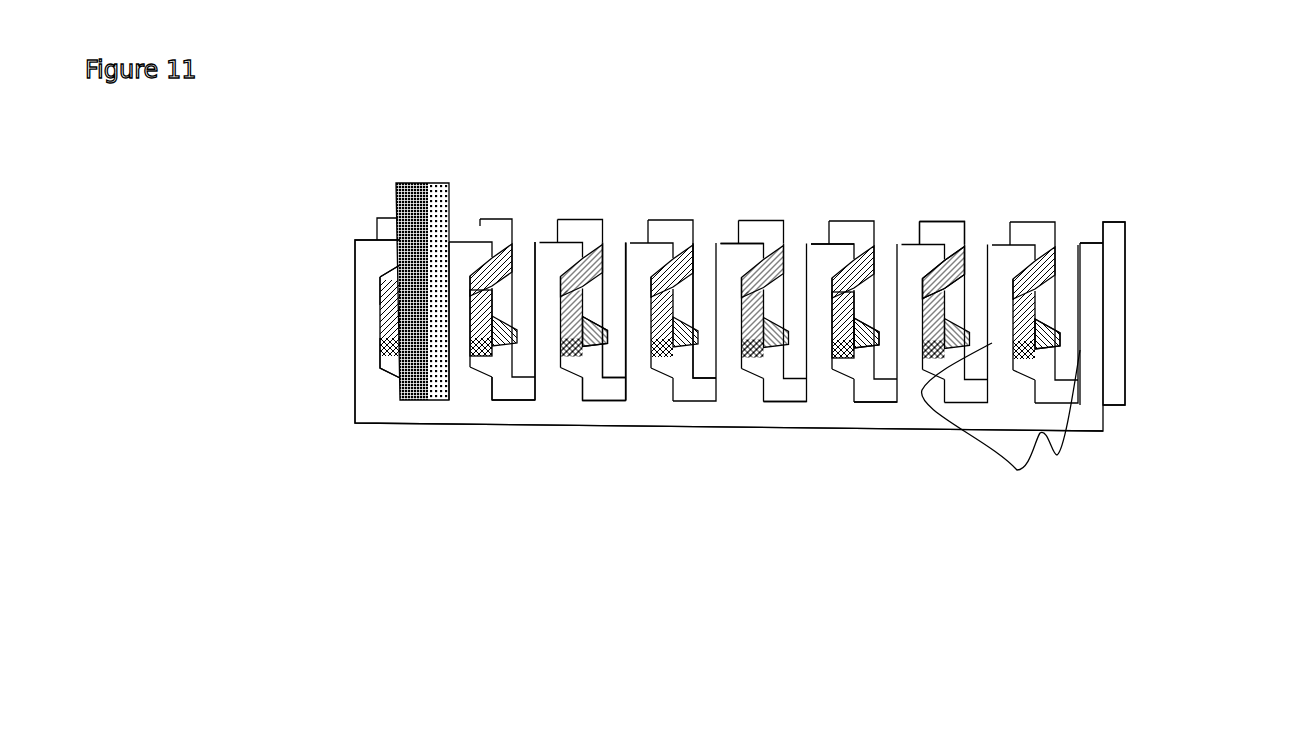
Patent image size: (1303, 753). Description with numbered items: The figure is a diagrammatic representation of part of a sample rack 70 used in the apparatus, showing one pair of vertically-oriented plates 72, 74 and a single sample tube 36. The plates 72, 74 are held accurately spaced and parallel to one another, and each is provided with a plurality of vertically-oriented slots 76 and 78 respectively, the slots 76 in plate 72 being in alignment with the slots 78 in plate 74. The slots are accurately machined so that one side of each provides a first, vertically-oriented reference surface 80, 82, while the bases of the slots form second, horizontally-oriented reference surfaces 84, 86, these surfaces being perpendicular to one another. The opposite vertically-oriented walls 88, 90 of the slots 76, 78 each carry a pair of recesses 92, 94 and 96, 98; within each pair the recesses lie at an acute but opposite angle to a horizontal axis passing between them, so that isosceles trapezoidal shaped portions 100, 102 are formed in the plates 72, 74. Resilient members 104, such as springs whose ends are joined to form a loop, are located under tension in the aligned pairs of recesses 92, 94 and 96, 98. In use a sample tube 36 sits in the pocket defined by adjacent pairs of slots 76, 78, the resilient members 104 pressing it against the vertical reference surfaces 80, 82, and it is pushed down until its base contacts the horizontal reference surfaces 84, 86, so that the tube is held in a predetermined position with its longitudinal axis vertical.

The sample tube 36 is at (455, 195).
The sample rack 70 is at (942, 147).
The plate 72 is at (1095, 347).
The plate 74 is at (1113, 240).
The slot 76 is at (867, 400).
The slot 78 is at (522, 233).
The first vertically-oriented reference surface 80 is at (740, 433).
The first vertically-oriented reference surface 82 is at (828, 242).
The second horizontally-oriented reference surface 84 is at (597, 402).
The second horizontally-oriented reference surface 86 is at (712, 345).
The vertically-oriented wall 88 is at (835, 320).
The vertically-oriented wall 90 is at (970, 240).
The recess 92 is at (380, 285).
The recess 94 is at (380, 357).
The recess 96 is at (968, 252).
The recess 98 is at (1047, 340).
The isosceles trapezoidal shaped portion 100 is at (485, 332).
The isosceles trapezoidal shaped portion 102 is at (868, 308).
The resilient member 104 is at (592, 342).